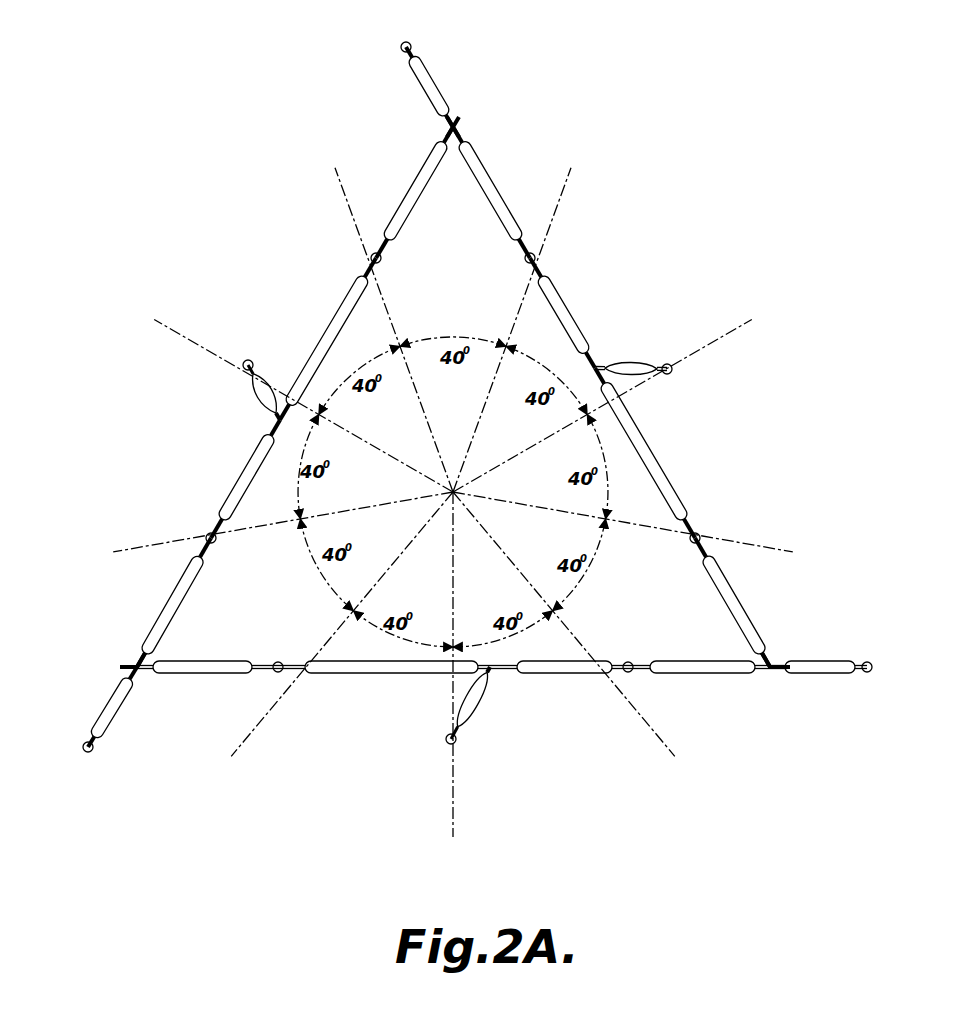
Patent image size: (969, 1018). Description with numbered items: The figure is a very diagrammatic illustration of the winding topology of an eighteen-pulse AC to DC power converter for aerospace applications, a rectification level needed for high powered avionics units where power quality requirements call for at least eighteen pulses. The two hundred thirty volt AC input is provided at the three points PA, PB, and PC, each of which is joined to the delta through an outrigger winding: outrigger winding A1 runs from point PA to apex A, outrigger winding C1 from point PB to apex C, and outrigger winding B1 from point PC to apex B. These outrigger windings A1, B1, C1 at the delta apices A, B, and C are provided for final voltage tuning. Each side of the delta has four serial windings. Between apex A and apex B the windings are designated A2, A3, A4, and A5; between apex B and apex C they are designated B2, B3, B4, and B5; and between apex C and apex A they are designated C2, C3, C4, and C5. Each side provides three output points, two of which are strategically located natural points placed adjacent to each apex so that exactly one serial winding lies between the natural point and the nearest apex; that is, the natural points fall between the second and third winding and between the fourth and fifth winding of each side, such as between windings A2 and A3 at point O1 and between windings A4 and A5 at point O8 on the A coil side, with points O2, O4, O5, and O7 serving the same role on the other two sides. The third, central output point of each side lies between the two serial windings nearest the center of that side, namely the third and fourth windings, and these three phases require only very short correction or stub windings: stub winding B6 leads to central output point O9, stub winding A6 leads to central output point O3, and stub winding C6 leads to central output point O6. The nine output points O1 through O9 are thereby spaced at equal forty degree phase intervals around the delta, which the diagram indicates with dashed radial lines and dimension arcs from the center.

The AC input point PA is at (401, 33).
The AC input point PB is at (75, 765).
The AC input point PC is at (890, 668).
The delta apex A is at (463, 117).
The delta apex B is at (780, 653).
The delta apex C is at (129, 660).
The outrigger winding A1 is at (441, 81).
The serial winding A2 is at (500, 192).
The serial winding A3 is at (571, 317).
The serial winding A4 is at (654, 458).
The serial winding A5 is at (737, 600).
The stub winding A6 is at (252, 398).
The outrigger winding B1 is at (815, 674).
The serial winding B2 is at (700, 674).
The serial winding B3 is at (565, 674).
The serial winding B4 is at (395, 674).
The serial winding B5 is at (205, 674).
The stub winding B6 is at (632, 362).
The outrigger winding C1 is at (106, 707).
The serial winding C2 is at (165, 605).
The serial winding C3 is at (236, 482).
The serial winding C4 is at (316, 352).
The serial winding C5 is at (407, 195).
The stub winding C6 is at (474, 712).
The natural output point O1 is at (552, 254).
The natural output point O2 is at (360, 254).
The central output point O3 is at (245, 352).
The natural output point O4 is at (195, 533).
The natural output point O5 is at (281, 684).
The central output point O6 is at (451, 759).
The natural output point O7 is at (624, 684).
The natural output point O8 is at (716, 533).
The central output point O9 is at (687, 370).